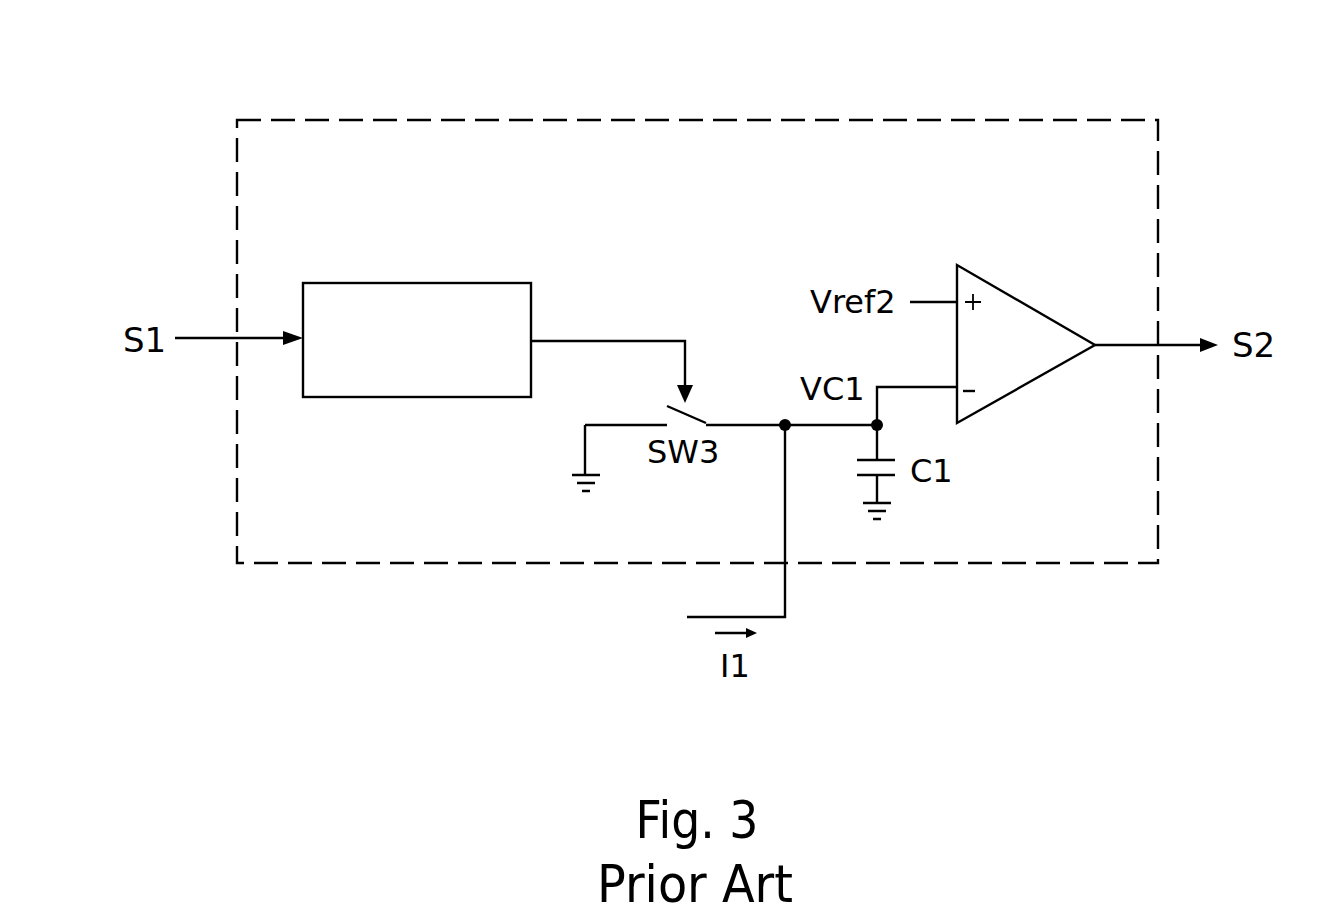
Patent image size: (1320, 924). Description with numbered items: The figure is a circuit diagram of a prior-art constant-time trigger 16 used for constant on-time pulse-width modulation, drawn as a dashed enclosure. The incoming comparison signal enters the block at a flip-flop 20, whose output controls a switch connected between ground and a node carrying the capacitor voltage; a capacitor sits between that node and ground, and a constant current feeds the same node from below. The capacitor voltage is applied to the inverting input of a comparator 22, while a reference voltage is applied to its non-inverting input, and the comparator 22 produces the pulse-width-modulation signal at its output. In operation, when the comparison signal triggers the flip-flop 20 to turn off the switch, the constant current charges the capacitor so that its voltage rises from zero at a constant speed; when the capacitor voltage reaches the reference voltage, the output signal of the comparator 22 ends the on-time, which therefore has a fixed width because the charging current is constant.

The constant-time trigger 16 is at (697, 120).
The flip-flop 20 is at (412, 283).
The comparator 22 is at (1023, 304).